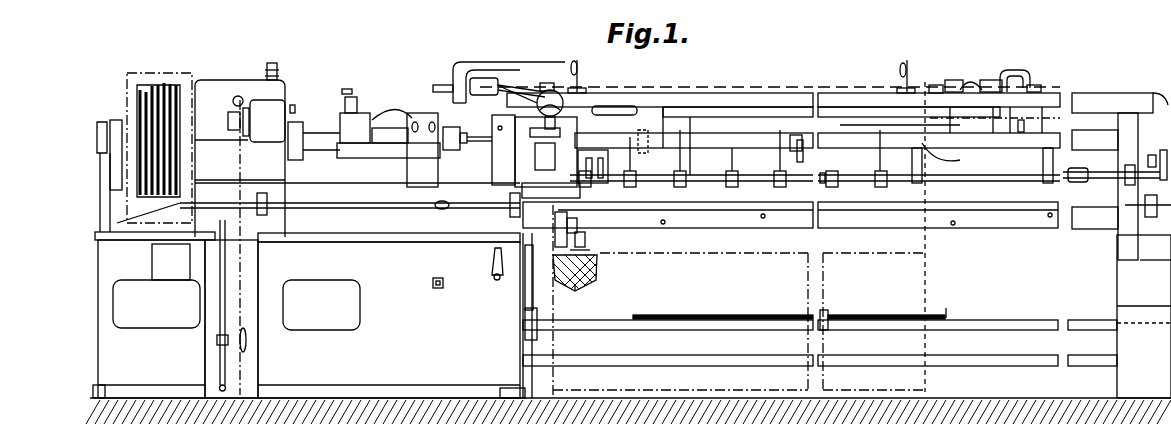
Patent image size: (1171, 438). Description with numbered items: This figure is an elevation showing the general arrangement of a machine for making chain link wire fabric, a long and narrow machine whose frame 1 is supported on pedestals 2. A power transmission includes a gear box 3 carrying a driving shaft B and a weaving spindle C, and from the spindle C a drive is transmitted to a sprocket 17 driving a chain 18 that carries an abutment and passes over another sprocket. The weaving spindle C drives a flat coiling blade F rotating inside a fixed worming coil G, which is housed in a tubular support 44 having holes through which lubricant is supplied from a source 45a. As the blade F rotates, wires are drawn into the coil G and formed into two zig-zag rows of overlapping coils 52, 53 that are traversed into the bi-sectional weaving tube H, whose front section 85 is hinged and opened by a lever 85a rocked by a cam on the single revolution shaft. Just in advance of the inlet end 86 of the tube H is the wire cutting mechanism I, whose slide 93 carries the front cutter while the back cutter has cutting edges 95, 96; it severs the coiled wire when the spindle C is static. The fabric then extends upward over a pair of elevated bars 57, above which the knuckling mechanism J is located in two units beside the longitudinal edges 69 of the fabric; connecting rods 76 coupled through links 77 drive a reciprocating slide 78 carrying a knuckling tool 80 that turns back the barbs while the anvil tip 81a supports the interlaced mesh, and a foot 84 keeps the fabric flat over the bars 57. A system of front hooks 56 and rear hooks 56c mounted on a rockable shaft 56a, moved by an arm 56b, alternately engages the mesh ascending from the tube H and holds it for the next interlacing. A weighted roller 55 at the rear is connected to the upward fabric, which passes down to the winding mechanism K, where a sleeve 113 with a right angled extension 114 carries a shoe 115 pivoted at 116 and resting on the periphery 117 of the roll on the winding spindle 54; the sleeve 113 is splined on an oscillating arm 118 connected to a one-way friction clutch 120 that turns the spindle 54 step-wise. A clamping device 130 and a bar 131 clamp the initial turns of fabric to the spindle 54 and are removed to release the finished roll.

The frame 1 is at (391, 315).
The pedestals 2 is at (632, 315).
The gear box 3 is at (219, 88).
The driving shaft B is at (182, 122).
The sprocket 17 is at (246, 121).
The chain 18 is at (238, 157).
The weaving spindle C is at (362, 128).
The worming coil G is at (385, 133).
The lubricant source 45a is at (400, 112).
The tubular support 44 is at (449, 127).
The coiling blade F is at (472, 142).
The cutting edge 96 is at (532, 130).
The slide 93 is at (548, 150).
The wire cutting mechanism I is at (538, 152).
The knuckling mechanism J is at (482, 78).
The reciprocating slide 78 is at (440, 84).
The knuckling tool 80 is at (535, 90).
The anvil tip 81a is at (547, 83).
The foot 84 is at (582, 84).
The connecting rods 76 is at (983, 53).
The cutting edge 95 is at (575, 138).
The inlet end 86 is at (580, 142).
The elevated bars 57 is at (720, 94).
The front section 85 is at (690, 130).
The weaving tube H is at (740, 131).
The front hooks 56 is at (682, 160).
The rear hooks 56c is at (736, 163).
The lever 85a is at (792, 158).
The rockable shaft 56a is at (960, 168).
The links 77 is at (1013, 76).
The longitudinal edges 69 is at (528, 253).
The sleeve 113 is at (523, 232).
The periphery 117 is at (645, 253).
The oscillating arm 118 is at (526, 288).
The one-way friction clutch 120 is at (527, 326).
The right angled extension 114 is at (568, 232).
The pivot 116 is at (580, 235).
The shoe 115 is at (588, 246).
The zig-zag wire 52 is at (597, 262).
The zig-zag wire 53 is at (594, 275).
The fabric winding mechanism K is at (540, 308).
The winding spindle 54 is at (605, 322).
The weighted roller 55 is at (992, 366).
The bar 131 is at (722, 314).
The clamping device 130 is at (942, 314).
The arm 56b is at (1150, 155).